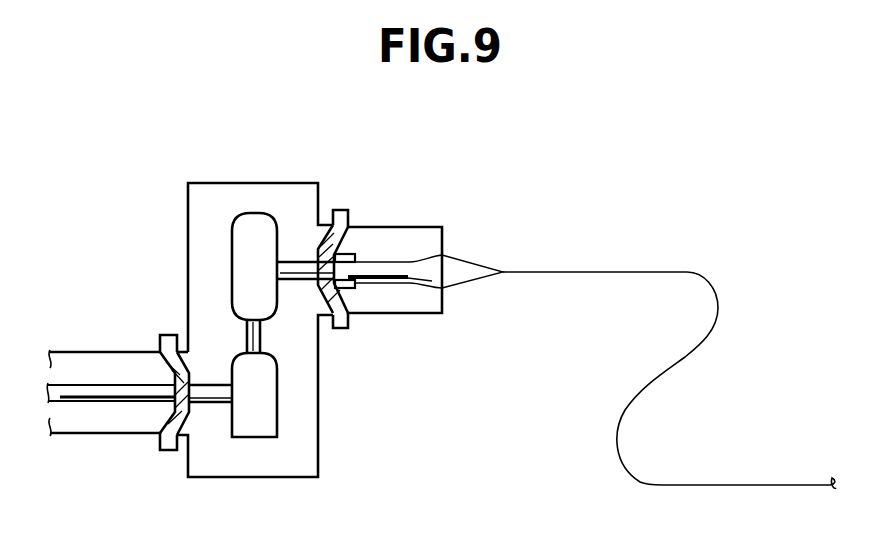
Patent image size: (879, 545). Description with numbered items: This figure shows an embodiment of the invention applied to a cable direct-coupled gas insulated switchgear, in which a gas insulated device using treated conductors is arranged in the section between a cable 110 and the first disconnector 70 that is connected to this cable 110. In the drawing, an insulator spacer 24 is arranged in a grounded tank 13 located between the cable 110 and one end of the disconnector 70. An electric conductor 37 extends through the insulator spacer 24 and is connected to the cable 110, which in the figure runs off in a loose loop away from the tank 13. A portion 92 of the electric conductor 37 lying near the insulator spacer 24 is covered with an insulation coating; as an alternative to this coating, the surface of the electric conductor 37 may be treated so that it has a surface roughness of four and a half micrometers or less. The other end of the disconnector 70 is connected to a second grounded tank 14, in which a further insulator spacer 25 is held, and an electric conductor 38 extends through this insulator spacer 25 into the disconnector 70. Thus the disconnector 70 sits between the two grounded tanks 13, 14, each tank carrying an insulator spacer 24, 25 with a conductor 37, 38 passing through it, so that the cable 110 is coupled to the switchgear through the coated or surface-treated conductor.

The first disconnector 70 is at (252, 183).
The insulator spacer 24 is at (340, 210).
The insulator spacer 25 is at (167, 335).
The grounded tank 13 is at (431, 227).
The grounded tank 14 is at (88, 351).
The portion of the electric conductor 92 is at (357, 292).
The electric conductor 37 is at (412, 290).
The electric conductor 38 is at (92, 402).
The cable 110 is at (640, 272).